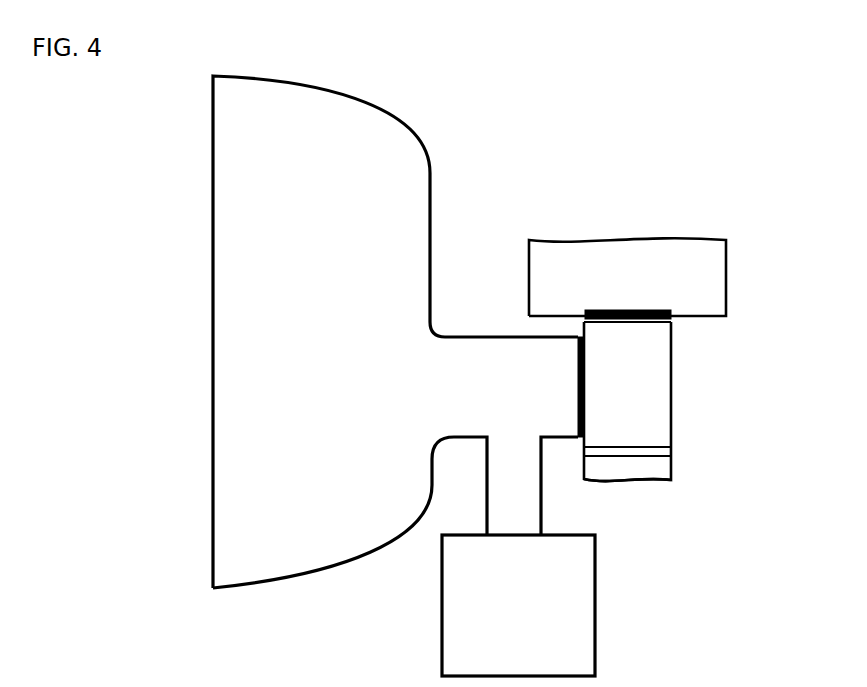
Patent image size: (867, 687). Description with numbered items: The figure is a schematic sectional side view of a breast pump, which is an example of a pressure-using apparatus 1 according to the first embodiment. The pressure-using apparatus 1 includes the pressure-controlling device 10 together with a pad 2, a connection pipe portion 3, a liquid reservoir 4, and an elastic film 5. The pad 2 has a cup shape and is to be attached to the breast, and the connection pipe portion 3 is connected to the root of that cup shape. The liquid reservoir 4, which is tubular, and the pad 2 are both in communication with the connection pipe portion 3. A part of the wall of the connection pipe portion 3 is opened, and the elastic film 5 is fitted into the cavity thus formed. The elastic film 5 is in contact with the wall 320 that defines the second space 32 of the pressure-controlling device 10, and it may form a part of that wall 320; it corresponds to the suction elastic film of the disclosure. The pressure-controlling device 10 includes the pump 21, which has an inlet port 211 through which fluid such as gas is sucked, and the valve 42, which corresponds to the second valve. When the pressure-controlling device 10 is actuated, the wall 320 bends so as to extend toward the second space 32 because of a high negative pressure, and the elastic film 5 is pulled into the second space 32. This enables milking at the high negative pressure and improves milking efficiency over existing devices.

The pressure-using apparatus 1 is at (572, 155).
The pad 2 is at (420, 177).
The connection pipe portion 3 is at (480, 350).
The liquid reservoir 4 is at (453, 600).
The elastic film 5 is at (577, 357).
The pump 21 is at (718, 260).
The inlet port 211 is at (663, 310).
The second space 32 is at (648, 390).
The wall 320 is at (586, 327).
The valve 42 is at (671, 452).
The pressure-controlling device 10 is at (670, 485).